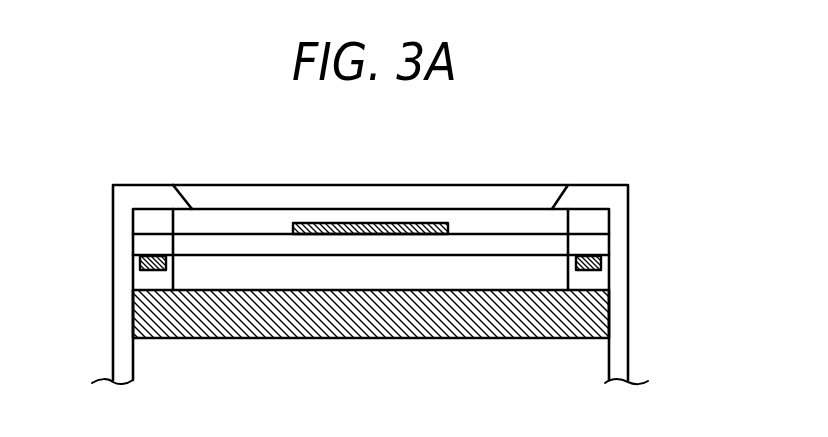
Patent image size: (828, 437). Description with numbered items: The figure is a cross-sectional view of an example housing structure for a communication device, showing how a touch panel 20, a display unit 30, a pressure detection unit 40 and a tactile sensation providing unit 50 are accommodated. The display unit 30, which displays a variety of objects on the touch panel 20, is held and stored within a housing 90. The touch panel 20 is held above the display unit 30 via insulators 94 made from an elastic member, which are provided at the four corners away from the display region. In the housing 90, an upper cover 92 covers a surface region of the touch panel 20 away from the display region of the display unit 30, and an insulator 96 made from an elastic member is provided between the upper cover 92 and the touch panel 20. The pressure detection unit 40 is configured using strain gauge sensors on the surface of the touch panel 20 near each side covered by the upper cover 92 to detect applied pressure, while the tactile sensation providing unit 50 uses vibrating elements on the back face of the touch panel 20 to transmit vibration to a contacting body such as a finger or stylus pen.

The touch panel 20 is at (208, 250).
The display unit 30 is at (163, 313).
The pressure detection unit 40 is at (398, 224).
The tactile sensation providing unit 50 is at (137, 258).
The housing 90 is at (618, 320).
The upper cover 92 is at (580, 200).
The insulator 94 is at (140, 278).
The insulator 96 is at (597, 222).